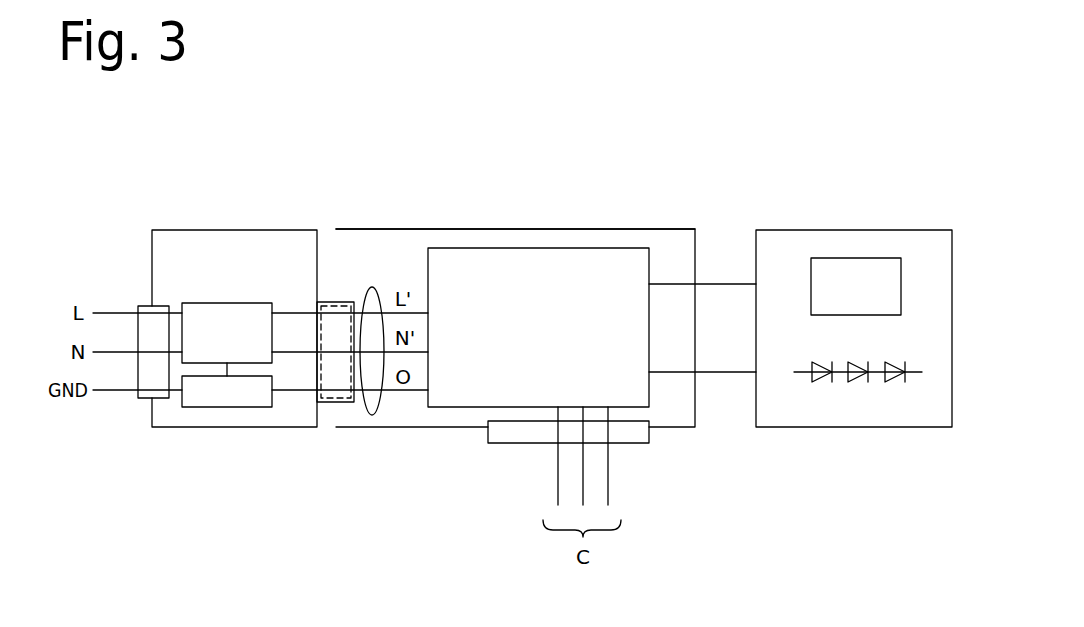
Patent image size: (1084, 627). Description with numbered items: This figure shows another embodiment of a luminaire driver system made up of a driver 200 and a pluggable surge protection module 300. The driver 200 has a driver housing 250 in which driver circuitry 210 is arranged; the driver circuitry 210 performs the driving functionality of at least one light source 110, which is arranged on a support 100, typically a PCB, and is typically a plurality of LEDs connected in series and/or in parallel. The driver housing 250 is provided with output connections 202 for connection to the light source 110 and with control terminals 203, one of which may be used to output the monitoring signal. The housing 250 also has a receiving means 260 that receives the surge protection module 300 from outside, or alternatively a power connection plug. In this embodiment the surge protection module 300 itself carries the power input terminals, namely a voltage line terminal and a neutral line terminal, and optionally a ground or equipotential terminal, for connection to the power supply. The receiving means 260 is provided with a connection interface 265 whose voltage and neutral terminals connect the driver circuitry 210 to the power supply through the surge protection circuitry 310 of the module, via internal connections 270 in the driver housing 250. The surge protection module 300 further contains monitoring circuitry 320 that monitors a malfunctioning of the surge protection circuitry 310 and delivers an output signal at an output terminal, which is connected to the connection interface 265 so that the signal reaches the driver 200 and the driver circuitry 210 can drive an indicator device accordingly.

The support 100 is at (800, 230).
The light source 110 is at (876, 381).
The driver 200 is at (637, 184).
The output connections 202 is at (747, 372).
The control terminals 203 is at (616, 485).
The driver circuitry 210 is at (485, 248).
The driver housing 250 is at (572, 229).
The receiving means 260 is at (332, 404).
The connection interface 265 is at (342, 305).
The internal connections 270 is at (372, 290).
The surge protection module 300 is at (244, 427).
The surge protection circuitry 310 is at (208, 383).
The monitoring circuitry 320 is at (208, 258).